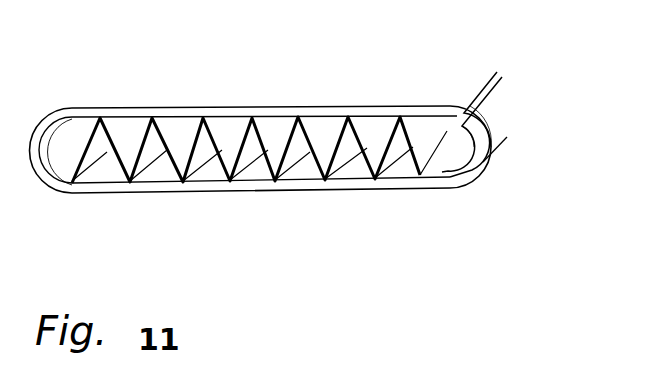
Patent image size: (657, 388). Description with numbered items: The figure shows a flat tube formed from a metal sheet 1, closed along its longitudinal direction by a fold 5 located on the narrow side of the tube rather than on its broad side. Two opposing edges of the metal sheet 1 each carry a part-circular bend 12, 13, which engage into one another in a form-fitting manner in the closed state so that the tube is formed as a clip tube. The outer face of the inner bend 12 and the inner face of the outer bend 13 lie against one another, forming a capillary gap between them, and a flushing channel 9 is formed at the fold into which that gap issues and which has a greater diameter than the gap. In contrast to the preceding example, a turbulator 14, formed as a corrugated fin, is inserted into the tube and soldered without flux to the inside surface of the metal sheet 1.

The metal sheet 1 is at (148, 43).
The turbulator 14 is at (173, 130).
The flushing channel 9 is at (497, 72).
The part-circular bend 12 is at (463, 137).
The part-circular bend 13 is at (487, 157).
The fold 5 is at (520, 113).